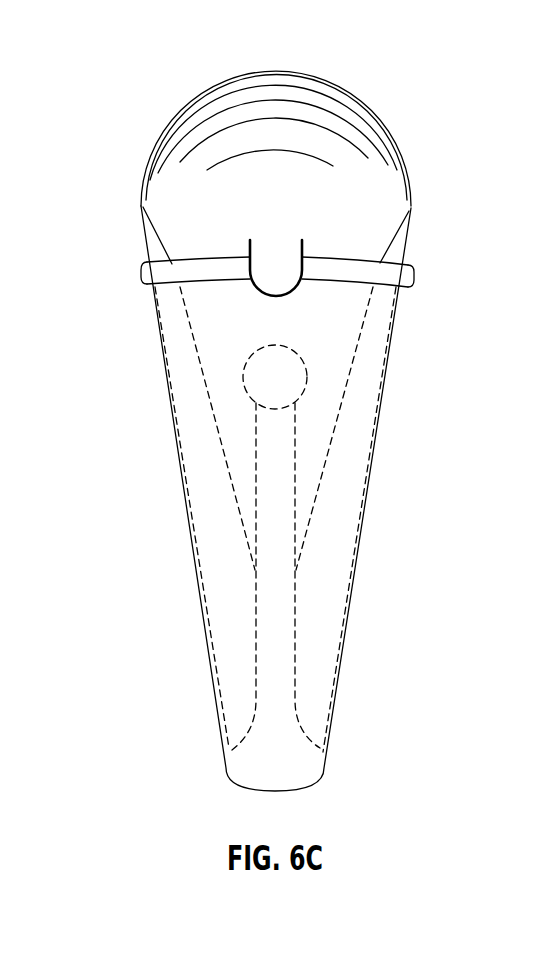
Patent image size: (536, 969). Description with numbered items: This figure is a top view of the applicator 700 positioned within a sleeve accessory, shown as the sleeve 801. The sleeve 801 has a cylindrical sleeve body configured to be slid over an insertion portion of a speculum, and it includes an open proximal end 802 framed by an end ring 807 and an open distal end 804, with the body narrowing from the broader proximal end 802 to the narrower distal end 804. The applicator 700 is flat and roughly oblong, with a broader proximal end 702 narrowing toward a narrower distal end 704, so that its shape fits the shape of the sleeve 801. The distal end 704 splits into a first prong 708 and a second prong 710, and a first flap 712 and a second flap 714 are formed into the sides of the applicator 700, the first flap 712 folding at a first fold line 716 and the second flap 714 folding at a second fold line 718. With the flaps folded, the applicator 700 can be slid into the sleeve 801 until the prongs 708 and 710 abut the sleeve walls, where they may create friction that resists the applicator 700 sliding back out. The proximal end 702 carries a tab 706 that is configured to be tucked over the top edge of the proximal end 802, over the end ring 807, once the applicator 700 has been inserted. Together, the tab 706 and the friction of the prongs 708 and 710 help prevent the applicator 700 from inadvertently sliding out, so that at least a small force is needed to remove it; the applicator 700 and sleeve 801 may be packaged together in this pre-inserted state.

The applicator 700 is at (310, 431).
The proximal end 702 is at (180, 90).
The distal end 704 is at (278, 728).
The tab 706 is at (262, 263).
The first prong 708 is at (364, 618).
The second prong 710 is at (187, 618).
The first flap 712 is at (347, 518).
The second flap 714 is at (210, 517).
The first fold line 716 is at (378, 408).
The second fold line 718 is at (176, 407).
The sleeve 801 is at (392, 357).
The open proximal end 802 is at (337, 247).
The open distal end 804 is at (247, 796).
The end ring 807 is at (414, 268).